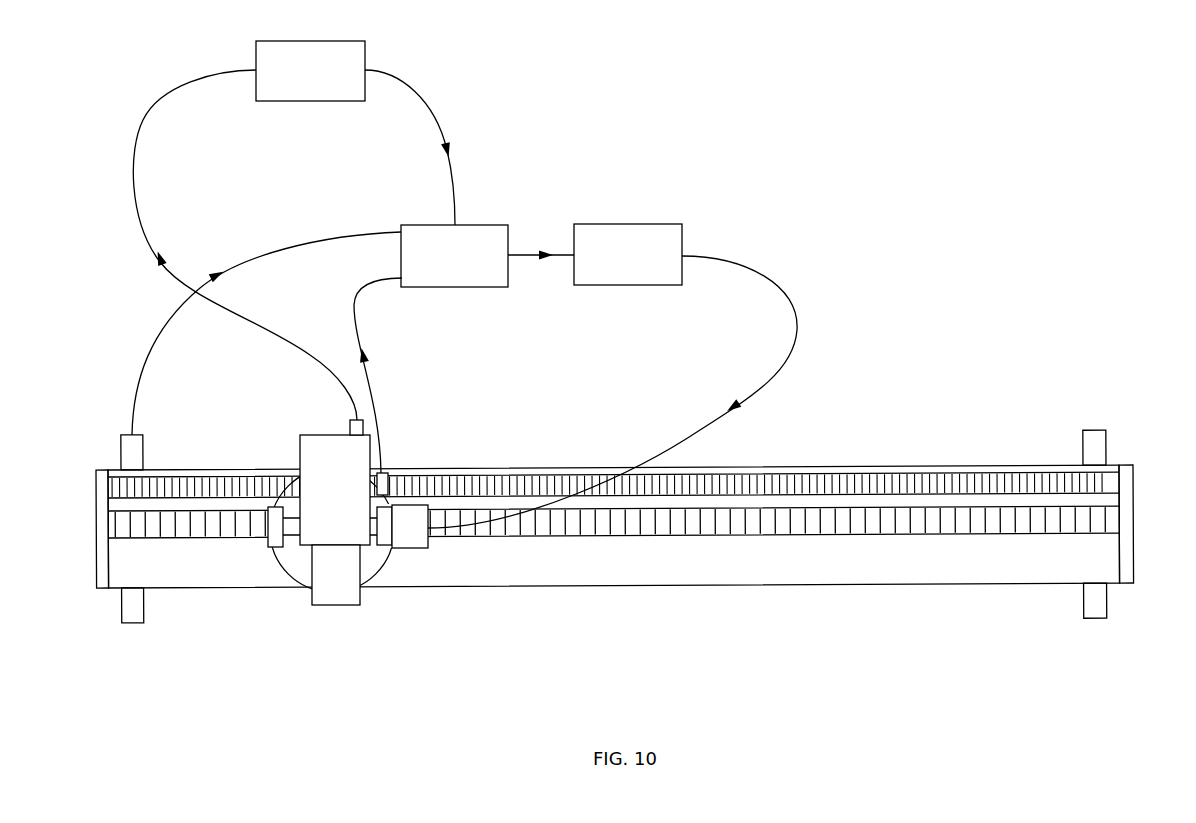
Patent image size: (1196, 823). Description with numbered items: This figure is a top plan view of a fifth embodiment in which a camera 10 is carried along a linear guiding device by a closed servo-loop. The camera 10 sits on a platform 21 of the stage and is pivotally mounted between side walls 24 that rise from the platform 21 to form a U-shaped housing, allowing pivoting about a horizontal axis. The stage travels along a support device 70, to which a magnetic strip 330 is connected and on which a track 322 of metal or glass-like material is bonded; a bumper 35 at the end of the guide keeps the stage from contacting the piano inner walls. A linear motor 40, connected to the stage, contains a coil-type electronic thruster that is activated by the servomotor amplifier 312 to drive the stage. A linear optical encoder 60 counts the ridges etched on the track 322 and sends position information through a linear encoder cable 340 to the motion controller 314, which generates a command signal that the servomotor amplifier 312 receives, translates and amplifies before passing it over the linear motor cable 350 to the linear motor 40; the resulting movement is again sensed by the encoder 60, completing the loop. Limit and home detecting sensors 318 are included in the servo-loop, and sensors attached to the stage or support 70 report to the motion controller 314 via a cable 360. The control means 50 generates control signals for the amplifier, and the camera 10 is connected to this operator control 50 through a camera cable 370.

The camera 10 is at (333, 597).
The platform 21 is at (370, 567).
The side walls 24 is at (275, 540).
The bumper 35 is at (1127, 565).
The linear motor 40 is at (430, 548).
The control means 50 is at (365, 57).
The linear optical encoder 60 is at (388, 474).
The support device 70 is at (928, 563).
The servomotor amplifier 312 is at (673, 223).
The motion controller 314 is at (497, 224).
The limit and home detecting sensors 318 is at (120, 440).
The track 322 is at (1007, 480).
The magnetic strip 330 is at (800, 533).
The linear encoder cable 340 is at (352, 313).
The linear motor cable 350 is at (802, 308).
The cable 360 is at (157, 335).
The camera cable 370 is at (143, 110).